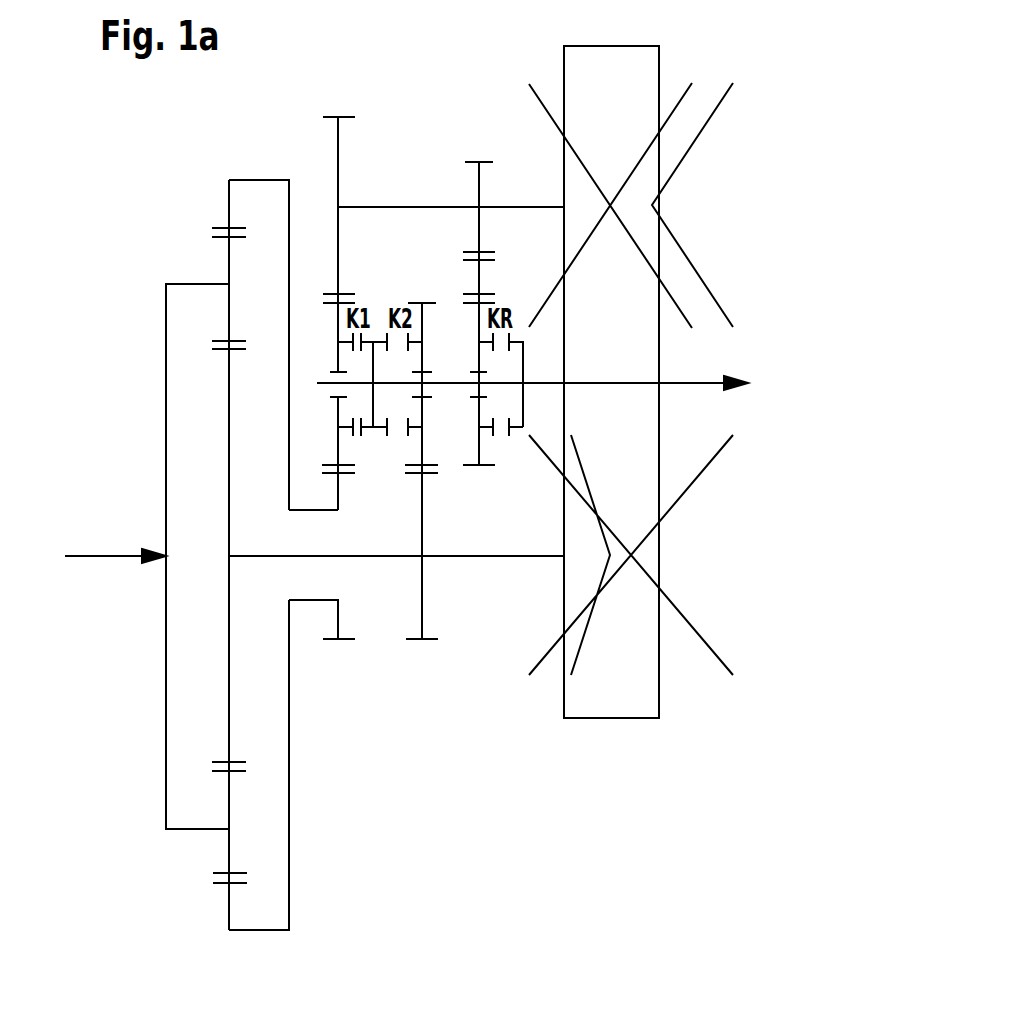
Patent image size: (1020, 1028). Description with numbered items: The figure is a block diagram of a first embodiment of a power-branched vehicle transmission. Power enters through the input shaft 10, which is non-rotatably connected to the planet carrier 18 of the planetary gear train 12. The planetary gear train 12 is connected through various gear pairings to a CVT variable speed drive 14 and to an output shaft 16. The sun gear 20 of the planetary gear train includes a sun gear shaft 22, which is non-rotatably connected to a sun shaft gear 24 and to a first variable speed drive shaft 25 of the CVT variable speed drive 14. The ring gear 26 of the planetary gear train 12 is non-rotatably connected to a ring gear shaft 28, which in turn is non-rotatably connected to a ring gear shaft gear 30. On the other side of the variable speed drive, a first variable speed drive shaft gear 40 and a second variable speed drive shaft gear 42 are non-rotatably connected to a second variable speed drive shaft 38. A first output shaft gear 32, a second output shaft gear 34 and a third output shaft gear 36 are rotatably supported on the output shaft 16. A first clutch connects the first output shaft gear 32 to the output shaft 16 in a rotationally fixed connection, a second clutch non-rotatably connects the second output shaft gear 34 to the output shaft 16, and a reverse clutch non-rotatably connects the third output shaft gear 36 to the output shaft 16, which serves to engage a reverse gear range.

The input shaft 10 is at (100, 557).
The planetary gear train 12 is at (134, 398).
The CVT variable speed drive 14 is at (707, 702).
The output shaft 16 is at (688, 384).
The planet carrier 18 is at (166, 715).
The sun gear 20 is at (229, 672).
The sun gear shaft 22 is at (375, 557).
The sun shaft gear 24 is at (422, 620).
The first variable speed drive shaft 25 is at (527, 557).
The ring gear 26 is at (258, 931).
The ring gear shaft 28 is at (318, 510).
The ring gear shaft gear 30 is at (343, 640).
The first output shaft gear 32 is at (338, 445).
The second output shaft gear 34 is at (422, 452).
The third output shaft gear 36 is at (479, 452).
The second variable speed drive shaft 38 is at (510, 207).
The first variable speed drive shaft gear 40 is at (338, 150).
The second variable speed drive shaft gear 42 is at (478, 183).